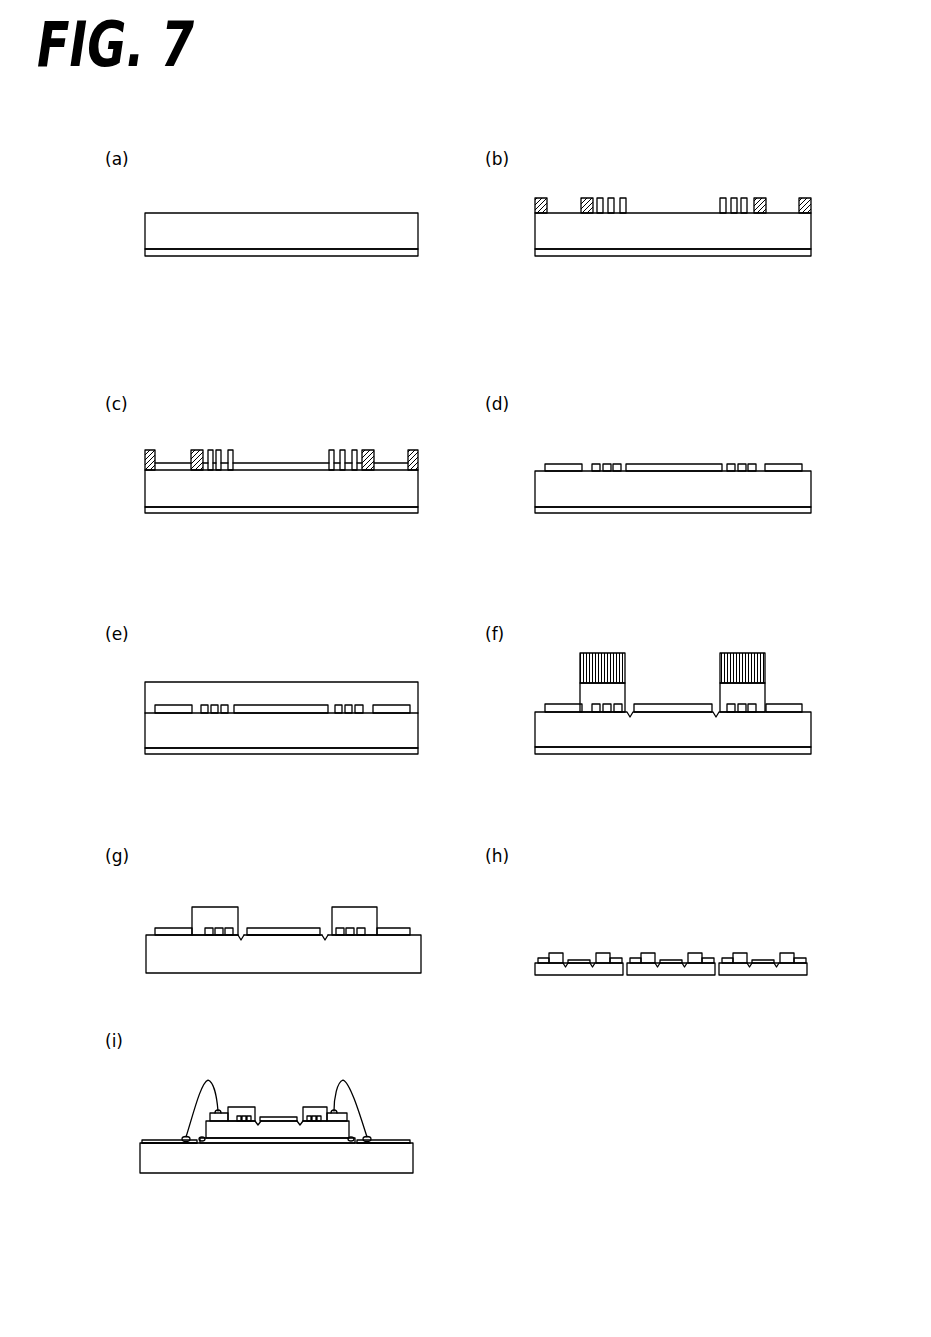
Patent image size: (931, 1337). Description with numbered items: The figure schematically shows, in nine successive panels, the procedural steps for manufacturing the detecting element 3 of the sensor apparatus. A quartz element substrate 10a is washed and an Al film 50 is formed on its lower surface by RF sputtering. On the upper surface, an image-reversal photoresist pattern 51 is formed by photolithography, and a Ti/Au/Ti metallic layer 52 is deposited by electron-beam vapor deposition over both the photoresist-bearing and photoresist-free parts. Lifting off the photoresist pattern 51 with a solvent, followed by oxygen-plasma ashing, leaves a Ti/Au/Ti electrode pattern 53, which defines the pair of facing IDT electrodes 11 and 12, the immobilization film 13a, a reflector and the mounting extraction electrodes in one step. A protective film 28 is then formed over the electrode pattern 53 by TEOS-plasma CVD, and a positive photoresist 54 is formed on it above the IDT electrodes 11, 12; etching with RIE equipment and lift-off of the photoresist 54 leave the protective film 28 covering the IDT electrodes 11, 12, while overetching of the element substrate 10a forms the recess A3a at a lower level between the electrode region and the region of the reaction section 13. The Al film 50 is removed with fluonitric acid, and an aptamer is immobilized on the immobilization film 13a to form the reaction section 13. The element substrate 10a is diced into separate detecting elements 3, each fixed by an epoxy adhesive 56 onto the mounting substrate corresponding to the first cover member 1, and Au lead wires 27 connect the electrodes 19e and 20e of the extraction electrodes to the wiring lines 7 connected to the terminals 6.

The element substrate 10a is at (280, 230).
The Al film 50 is at (233, 256).
The photoresist pattern 51 is at (587, 199).
The metallic layer 52 is at (278, 464).
The Ti/Au/Ti electrode pattern 53 is at (566, 466).
The protective film 28 is at (273, 695).
The positive photoresist 54 is at (598, 665).
The second IDT electrode 12 is at (216, 928).
The recess A3a is at (240, 930).
The immobilization film 13a is at (262, 930).
The reaction section 13 is at (300, 928).
The first IDT electrode 11 is at (348, 930).
The detecting element 3 is at (577, 930).
The lead wires 27 is at (200, 1095).
The terminals 6 is at (150, 1140).
The wiring lines 7 is at (172, 1143).
The epoxy adhesive 56 is at (201, 1143).
The electrode of extraction electrode 20e is at (218, 1121).
The first cover member 1 is at (271, 1160).
The electrode of extraction electrode 19e is at (334, 1121).